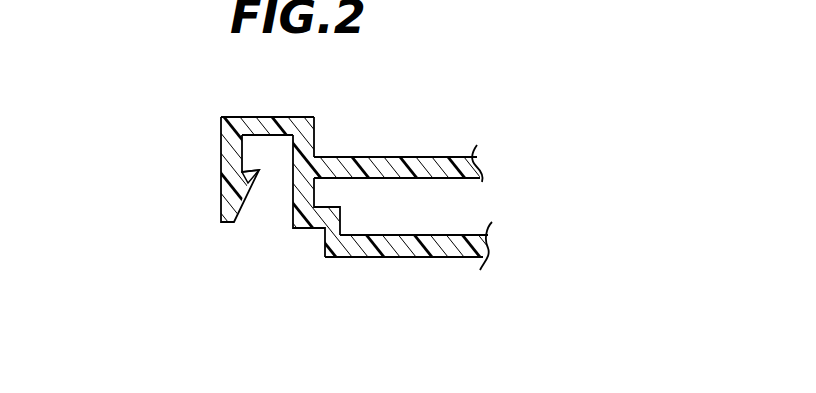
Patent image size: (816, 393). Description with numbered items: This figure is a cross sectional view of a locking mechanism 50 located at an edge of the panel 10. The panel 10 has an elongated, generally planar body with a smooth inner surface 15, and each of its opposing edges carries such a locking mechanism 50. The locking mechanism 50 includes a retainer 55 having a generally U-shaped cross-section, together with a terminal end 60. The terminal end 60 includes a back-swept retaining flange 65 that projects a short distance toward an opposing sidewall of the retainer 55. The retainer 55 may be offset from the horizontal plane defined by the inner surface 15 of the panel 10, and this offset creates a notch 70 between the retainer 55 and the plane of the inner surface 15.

The panel 10 is at (348, 124).
The inner surface 15 is at (360, 258).
The locking mechanism 50 is at (208, 212).
The retainer 55 is at (260, 118).
The terminal end 60 is at (228, 224).
The back-swept retaining flange 65 is at (245, 180).
The notch 70 is at (309, 242).